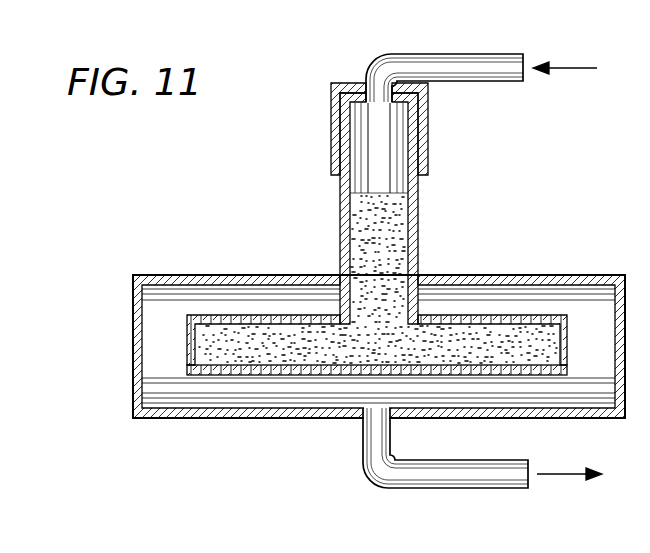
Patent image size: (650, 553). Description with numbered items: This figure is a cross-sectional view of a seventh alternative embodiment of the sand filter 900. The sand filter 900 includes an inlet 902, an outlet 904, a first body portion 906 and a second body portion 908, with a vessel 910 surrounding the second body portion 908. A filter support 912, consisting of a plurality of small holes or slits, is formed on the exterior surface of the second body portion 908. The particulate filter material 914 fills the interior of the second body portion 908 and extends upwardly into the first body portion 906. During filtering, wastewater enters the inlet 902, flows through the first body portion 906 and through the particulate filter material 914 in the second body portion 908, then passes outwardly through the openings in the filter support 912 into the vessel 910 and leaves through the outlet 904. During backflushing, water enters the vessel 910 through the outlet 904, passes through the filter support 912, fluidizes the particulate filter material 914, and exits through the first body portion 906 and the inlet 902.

The sand filter 900 is at (475, 242).
The inlet 902 is at (373, 62).
The outlet 904 is at (365, 465).
The first body portion 906 is at (420, 202).
The second body portion 908 is at (278, 314).
The vessel 910 is at (133, 297).
The filter support 912 is at (256, 373).
The particulate filter material 914 is at (357, 232).